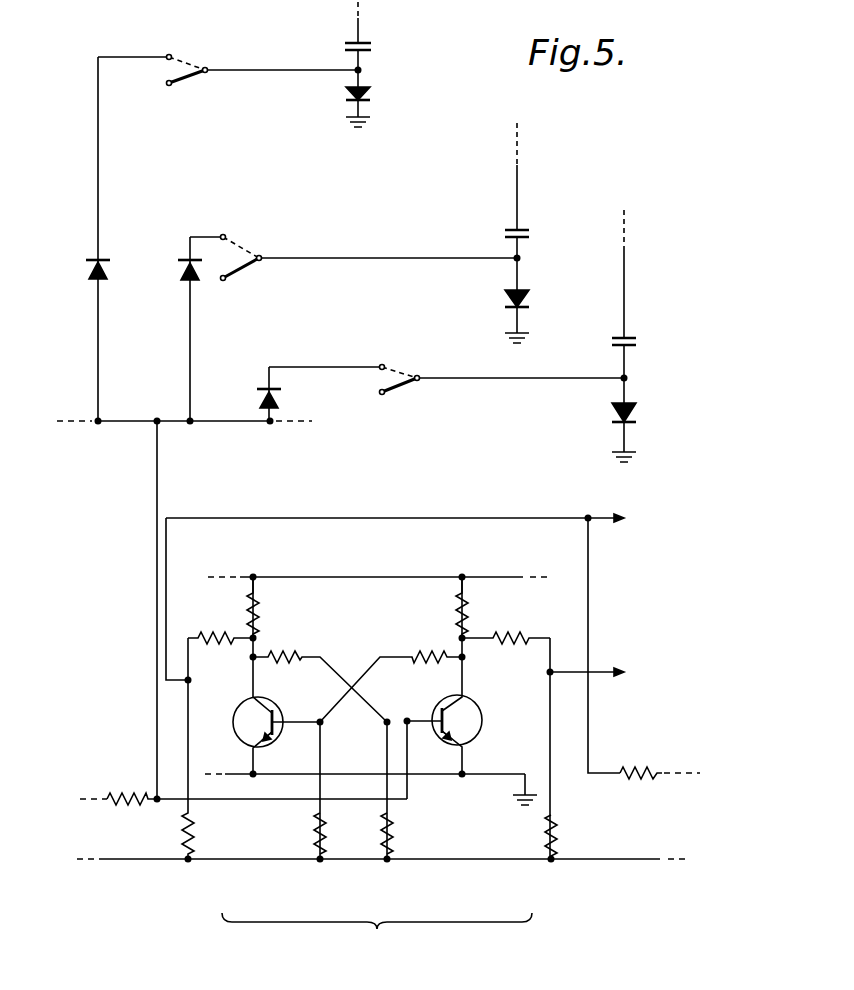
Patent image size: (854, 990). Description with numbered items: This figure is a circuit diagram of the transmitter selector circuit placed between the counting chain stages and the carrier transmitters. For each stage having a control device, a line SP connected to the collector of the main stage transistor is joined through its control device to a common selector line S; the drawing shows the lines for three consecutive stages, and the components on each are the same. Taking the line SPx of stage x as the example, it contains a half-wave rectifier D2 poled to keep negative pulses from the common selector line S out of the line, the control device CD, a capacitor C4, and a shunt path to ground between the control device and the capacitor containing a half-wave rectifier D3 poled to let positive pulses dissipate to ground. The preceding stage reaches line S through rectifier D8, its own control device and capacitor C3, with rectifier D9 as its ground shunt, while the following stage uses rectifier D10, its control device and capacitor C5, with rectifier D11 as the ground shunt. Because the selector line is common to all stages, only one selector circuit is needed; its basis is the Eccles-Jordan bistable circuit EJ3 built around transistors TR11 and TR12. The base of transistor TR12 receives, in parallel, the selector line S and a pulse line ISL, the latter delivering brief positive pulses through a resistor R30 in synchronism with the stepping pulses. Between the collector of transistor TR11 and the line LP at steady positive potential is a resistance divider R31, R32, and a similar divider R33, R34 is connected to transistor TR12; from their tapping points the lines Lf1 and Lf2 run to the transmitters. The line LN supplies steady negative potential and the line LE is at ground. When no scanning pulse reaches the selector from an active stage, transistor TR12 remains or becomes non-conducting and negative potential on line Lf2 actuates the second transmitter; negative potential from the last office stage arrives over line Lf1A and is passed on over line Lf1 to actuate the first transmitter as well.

The capacitor C3 is at (371, 46).
The rectifier D9 is at (362, 97).
The rectifier D8 is at (92, 270).
The half-wave rectifier D2 is at (176, 273).
The control device CD is at (248, 254).
The rectifier D10 is at (266, 386).
The common selector line S is at (240, 428).
The line SP for stage x SPx is at (517, 183).
The capacitor C4 is at (531, 260).
The half-wave rectifier D3 is at (529, 298).
The capacitor C5 is at (637, 343).
The rectifier D11 is at (632, 413).
The line Lf1 is at (400, 532).
The line LN is at (372, 575).
The resistor R31 is at (223, 610).
The resistor R33 is at (503, 610).
The transistor TR11 is at (238, 711).
The transistor TR12 is at (482, 721).
The line Lf2 is at (588, 692).
The line LE is at (372, 769).
The pulse line ISL is at (80, 799).
The resistor R30 is at (257, 787).
The line Lf1A is at (682, 762).
The resistor R32 is at (184, 836).
The line LP is at (372, 853).
The resistor R34 is at (572, 837).
The Eccles-Jordan bistable circuit EJ3 is at (377, 937).